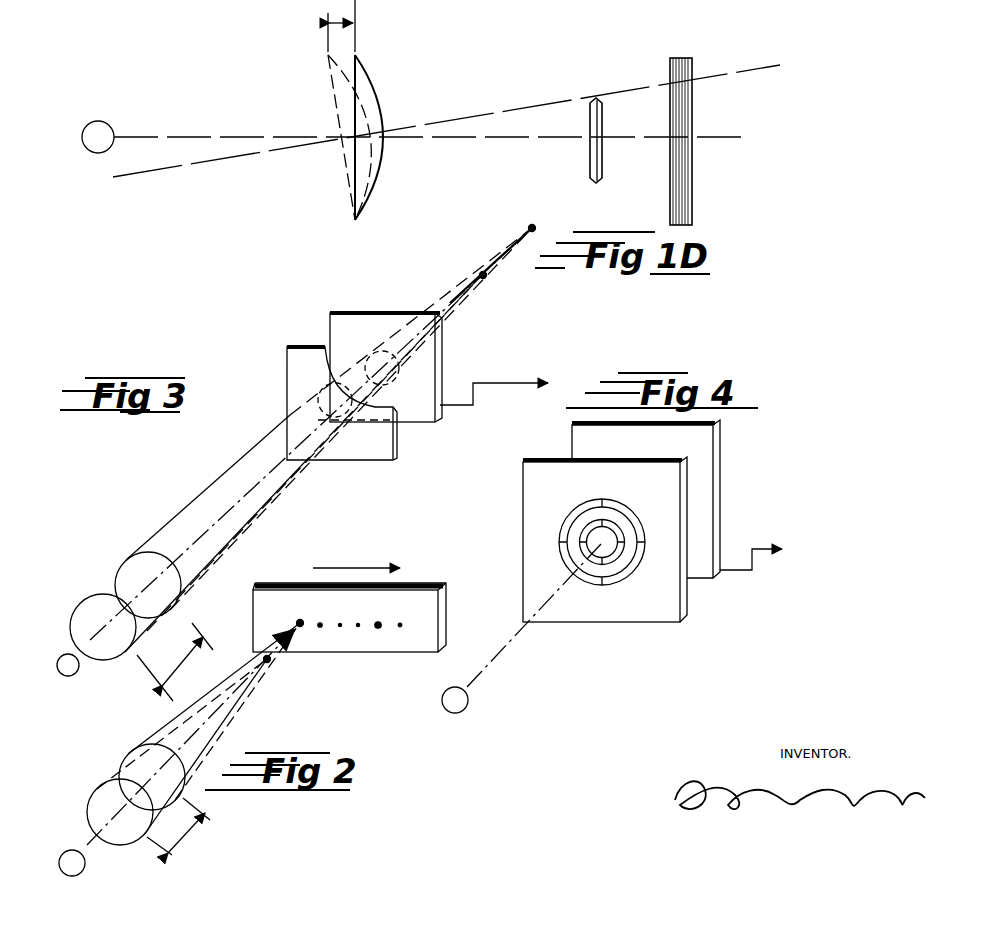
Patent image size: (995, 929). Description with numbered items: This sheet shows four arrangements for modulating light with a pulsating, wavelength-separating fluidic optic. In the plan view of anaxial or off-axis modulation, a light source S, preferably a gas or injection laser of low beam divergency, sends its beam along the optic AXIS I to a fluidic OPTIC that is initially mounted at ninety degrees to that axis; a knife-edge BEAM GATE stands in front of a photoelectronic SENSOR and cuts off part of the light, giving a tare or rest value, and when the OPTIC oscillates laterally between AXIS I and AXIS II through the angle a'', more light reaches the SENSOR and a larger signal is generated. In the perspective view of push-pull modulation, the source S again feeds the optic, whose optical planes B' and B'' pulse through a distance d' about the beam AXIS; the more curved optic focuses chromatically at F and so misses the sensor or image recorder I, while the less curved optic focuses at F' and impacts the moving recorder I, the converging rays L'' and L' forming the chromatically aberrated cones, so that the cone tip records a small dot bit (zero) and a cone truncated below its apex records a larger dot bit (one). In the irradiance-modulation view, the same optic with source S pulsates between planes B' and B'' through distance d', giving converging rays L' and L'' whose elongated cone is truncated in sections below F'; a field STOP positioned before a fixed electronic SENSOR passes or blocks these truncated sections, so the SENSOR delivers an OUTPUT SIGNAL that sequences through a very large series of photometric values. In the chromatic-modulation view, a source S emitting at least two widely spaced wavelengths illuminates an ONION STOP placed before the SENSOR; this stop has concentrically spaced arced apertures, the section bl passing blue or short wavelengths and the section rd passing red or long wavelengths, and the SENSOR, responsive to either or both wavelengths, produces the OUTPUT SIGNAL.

In FIG. 1D, the light source S is at (98, 137).
In FIG. 3, the light source S is at (68, 665).
In FIG. 2, the light source S is at (72, 863).
In FIG. 4, the light source S is at (521, 628).
In FIG. 1D, the optic axis-I AXIS I is at (429, 125).
In FIG. 1D, the axis-II AXIS II is at (446, 129).
In FIG. 1D, the fluidic optic OPTIC is at (363, 207).
In FIG. 1D, the angle a'' is at (341, 26).
In FIG. 1D, the beam gate BEAM GATE is at (590, 178).
In FIG. 1D, the sensor SENSOR is at (692, 105).
In FIG. 3, the sensor SENSOR is at (443, 343).
In FIG. 4, the sensor SENSOR is at (720, 440).
In FIG. 3, the optical plane B' is at (99, 612).
In FIG. 2, the optical plane B' is at (108, 801).
In FIG. 3, the optical plane B'' is at (134, 571).
In FIG. 2, the optical plane B'' is at (143, 772).
In FIG. 3, the axis AXIS is at (90, 640).
In FIG. 2, the axis AXIS is at (100, 850).
In FIG. 3, the converging rays L' is at (303, 463).
In FIG. 2, the converging rays L' is at (182, 747).
In FIG. 3, the converging rays L'' is at (329, 419).
In FIG. 2, the converging rays L'' is at (214, 711).
In FIG. 3, the distance d' is at (175, 662).
In FIG. 2, the distance d' is at (178, 826).
In FIG. 3, the focal point F is at (493, 259).
In FIG. 2, the focal point F is at (278, 668).
In FIG. 3, the focal point F' is at (499, 274).
In FIG. 2, the focal point F' is at (282, 612).
In FIG. 3, the field stop STOP is at (370, 453).
In FIG. 3, the output signal OUTPUT SIGNAL is at (494, 381).
In FIG. 4, the output signal OUTPUT SIGNAL is at (789, 551).
In FIG. 2, the sensor or image recorder I is at (413, 603).
In FIG. 4, the arc section rd is at (568, 517).
In FIG. 4, the arc section bl is at (617, 560).
In FIG. 4, the onion stop ONION STOP is at (610, 610).